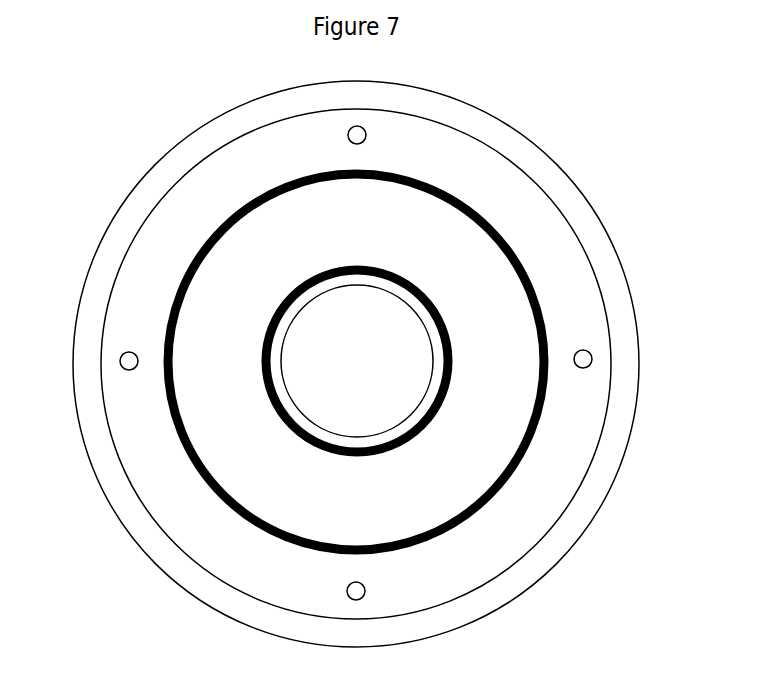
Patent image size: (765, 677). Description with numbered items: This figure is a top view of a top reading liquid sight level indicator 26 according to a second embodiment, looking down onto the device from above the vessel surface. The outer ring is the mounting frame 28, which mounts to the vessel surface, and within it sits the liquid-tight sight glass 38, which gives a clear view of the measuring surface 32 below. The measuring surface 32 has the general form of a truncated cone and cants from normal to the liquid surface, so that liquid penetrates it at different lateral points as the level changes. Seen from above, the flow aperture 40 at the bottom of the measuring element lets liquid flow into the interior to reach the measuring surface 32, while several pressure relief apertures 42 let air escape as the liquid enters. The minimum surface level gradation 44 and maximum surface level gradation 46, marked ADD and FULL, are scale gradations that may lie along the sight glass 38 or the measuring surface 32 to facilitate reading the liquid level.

The top reading liquid sight level indicator 26 is at (577, 155).
The mounting frame 28 is at (148, 560).
The measuring surface 32 is at (224, 375).
The sight glass 38 is at (103, 412).
The flow aperture 40 is at (282, 372).
The pressure relief aperture 42 is at (358, 126).
The minimum surface level gradation 44 is at (407, 438).
The maximum surface level gradation 46 is at (450, 533).